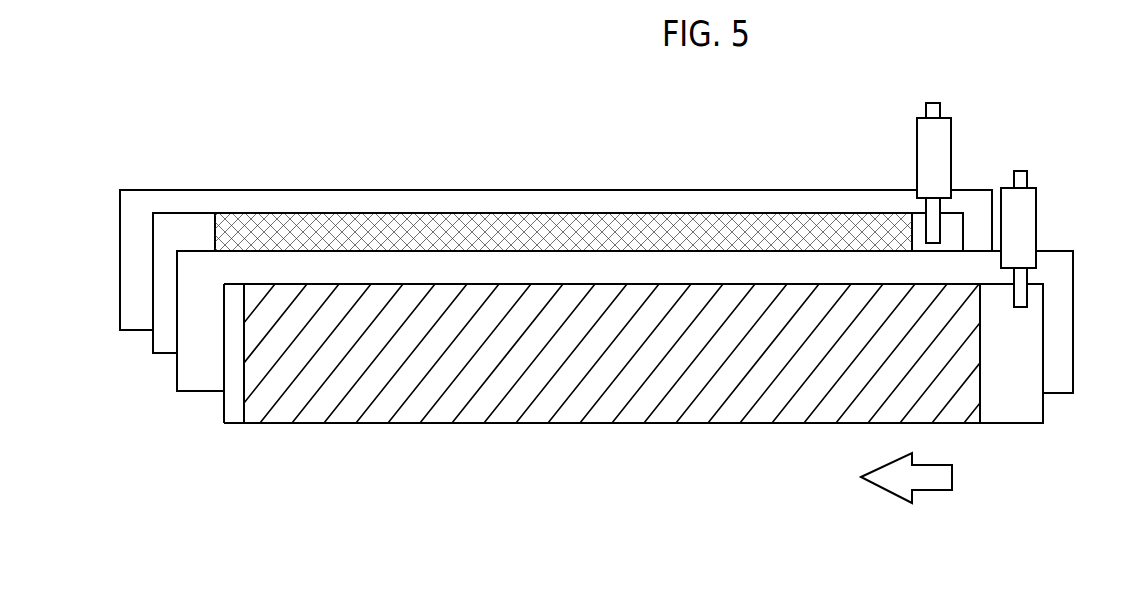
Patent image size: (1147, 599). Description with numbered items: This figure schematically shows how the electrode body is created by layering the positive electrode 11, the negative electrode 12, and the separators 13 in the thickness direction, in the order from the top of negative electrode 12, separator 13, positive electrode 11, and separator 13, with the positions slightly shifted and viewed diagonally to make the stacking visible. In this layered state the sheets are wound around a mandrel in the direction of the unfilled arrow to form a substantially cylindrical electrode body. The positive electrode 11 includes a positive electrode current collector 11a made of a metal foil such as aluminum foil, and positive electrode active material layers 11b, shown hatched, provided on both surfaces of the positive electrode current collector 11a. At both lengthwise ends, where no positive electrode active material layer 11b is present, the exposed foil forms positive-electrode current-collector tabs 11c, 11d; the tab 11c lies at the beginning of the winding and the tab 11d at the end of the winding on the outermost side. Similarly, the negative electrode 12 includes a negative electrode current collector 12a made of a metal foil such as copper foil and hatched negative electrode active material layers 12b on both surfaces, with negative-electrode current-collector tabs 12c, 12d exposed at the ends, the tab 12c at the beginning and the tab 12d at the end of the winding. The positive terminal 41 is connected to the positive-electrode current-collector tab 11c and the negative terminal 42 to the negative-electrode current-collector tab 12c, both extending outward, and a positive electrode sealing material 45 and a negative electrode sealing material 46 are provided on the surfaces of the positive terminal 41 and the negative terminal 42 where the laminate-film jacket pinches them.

The positive electrode 11 is at (285, 116).
The positive electrode current collector 11a is at (205, 222).
The positive electrode active material layer 11b is at (253, 222).
The positive-electrode current-collector tab 11c is at (958, 232).
The positive-electrode current-collector tab 11d is at (175, 236).
The negative electrode 12 is at (306, 496).
The negative electrode current collector 12a is at (238, 410).
The negative electrode active material layer 12b is at (267, 408).
The negative-electrode current-collector tab 12c is at (1030, 335).
The negative-electrode current-collector tab 12d is at (228, 372).
The separator 13 is at (607, 207).
The positive terminal 41 is at (930, 103).
The negative terminal 42 is at (1017, 170).
The positive electrode sealing material 45 is at (928, 155).
The negative electrode sealing material 46 is at (1023, 217).